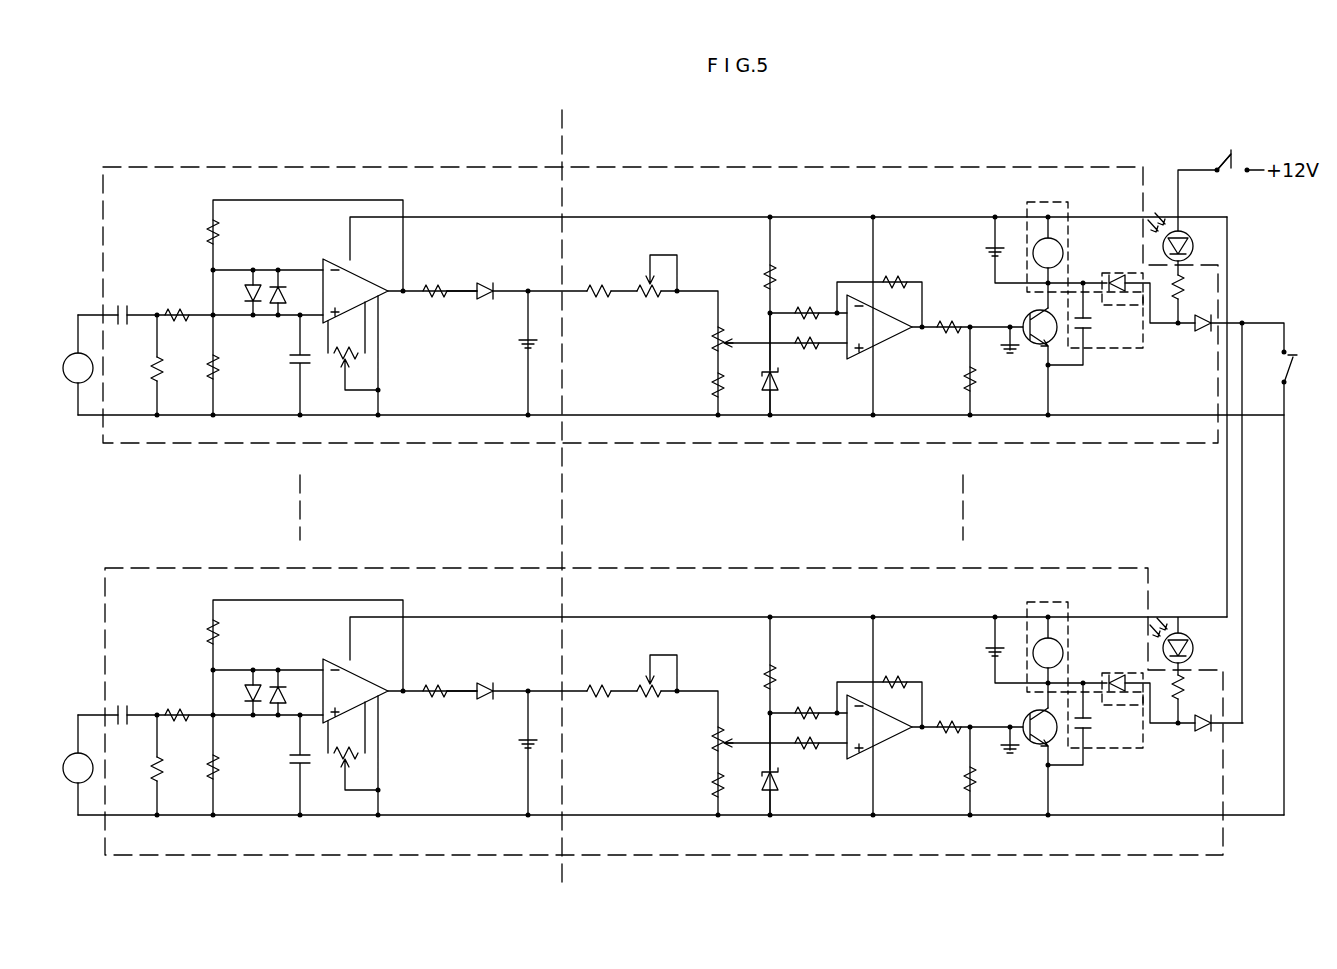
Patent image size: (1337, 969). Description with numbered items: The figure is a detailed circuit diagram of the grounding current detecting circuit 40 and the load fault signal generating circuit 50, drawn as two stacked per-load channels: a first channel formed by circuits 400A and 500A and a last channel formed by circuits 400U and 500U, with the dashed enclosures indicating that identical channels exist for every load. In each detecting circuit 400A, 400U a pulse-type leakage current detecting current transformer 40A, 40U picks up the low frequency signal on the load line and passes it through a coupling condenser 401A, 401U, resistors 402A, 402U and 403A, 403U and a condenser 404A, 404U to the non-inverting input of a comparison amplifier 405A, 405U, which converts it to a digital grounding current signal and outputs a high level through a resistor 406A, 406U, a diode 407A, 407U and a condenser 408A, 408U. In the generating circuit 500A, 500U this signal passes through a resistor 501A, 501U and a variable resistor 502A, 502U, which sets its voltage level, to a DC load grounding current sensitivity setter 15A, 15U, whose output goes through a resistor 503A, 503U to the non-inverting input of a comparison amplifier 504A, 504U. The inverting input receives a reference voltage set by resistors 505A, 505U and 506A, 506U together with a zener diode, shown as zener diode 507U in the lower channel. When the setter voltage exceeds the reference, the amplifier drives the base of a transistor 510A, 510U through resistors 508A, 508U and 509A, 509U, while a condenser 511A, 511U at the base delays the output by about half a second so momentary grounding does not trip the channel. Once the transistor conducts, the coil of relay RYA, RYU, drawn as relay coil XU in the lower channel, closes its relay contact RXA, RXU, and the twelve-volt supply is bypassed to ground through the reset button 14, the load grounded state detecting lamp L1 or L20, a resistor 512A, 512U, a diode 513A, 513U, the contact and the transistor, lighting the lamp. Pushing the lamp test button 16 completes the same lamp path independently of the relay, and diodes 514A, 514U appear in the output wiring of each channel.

The grounding current detecting circuit 40 is at (425, 163).
The load fault signal generating circuit 50 is at (930, 165).
The reset button 14 is at (1236, 158).
The lamp test button 16 is at (1292, 360).
The grounding current detecting circuit 400A is at (148, 155).
The grounding current detecting circuit 400U is at (176, 568).
The load fault signal generating circuit 500A is at (760, 167).
The load fault signal generating circuit 500U is at (817, 568).
The leakage current detecting current transformer 40A is at (73, 382).
The leakage current detecting current transformer 40U is at (66, 766).
The coupling condenser 401A is at (123, 305).
The coupling condenser 401U is at (137, 691).
The resistor 402A is at (152, 372).
The resistor 402U is at (136, 765).
The resistor 403A is at (183, 325).
The resistor 403U is at (191, 697).
The condenser 404A is at (293, 361).
The condenser 404U is at (280, 765).
The comparison amplifier 405A is at (333, 262).
The comparison amplifier 405U is at (338, 719).
The resistor 406A is at (443, 285).
The resistor 406U is at (452, 670).
The diode 407A is at (485, 300).
The diode 407U is at (483, 713).
The condenser 408A is at (521, 350).
The condenser 408U is at (502, 761).
The resistor 501A is at (598, 285).
The resistor 501U is at (612, 667).
The zener diode 507U is at (803, 764).
The variable resistor 502A is at (652, 300).
The variable resistor 502U is at (658, 697).
The DC load grounding current sensitivity setter 15A is at (712, 350).
The DC load grounding current sensitivity setter 15U is at (700, 762).
The resistor 505A is at (761, 276).
The resistor 505U is at (744, 668).
The resistor 506A is at (810, 310).
The resistor 506U is at (818, 683).
The resistor 503A is at (815, 349).
The resistor 503U is at (822, 763).
The comparison amplifier 504A is at (906, 333).
The comparison amplifier 504U is at (890, 724).
The resistor 508A is at (948, 318).
The resistor 508U is at (953, 697).
The resistor 509A is at (966, 372).
The resistor 509U is at (942, 786).
The transistor 510A is at (1024, 316).
The transistor 510U is at (1016, 720).
The condenser 511A is at (1006, 352).
The condenser 511U is at (1016, 775).
The relay RYA is at (1081, 250).
The relay RYU is at (1075, 637).
The relay coil XU is at (1048, 653).
The relay contact RXA is at (1097, 329).
The relay contact RXU is at (1105, 721).
The diode 513A is at (1121, 274).
The diode 513U is at (1125, 663).
The load grounded state detecting lamp L1 is at (1192, 254).
The load grounded state detecting lamp L20 is at (1195, 640).
The resistor 512A is at (1185, 296).
The resistor 512U is at (1254, 695).
The diode 514A is at (1206, 332).
The diode 514U is at (1198, 749).